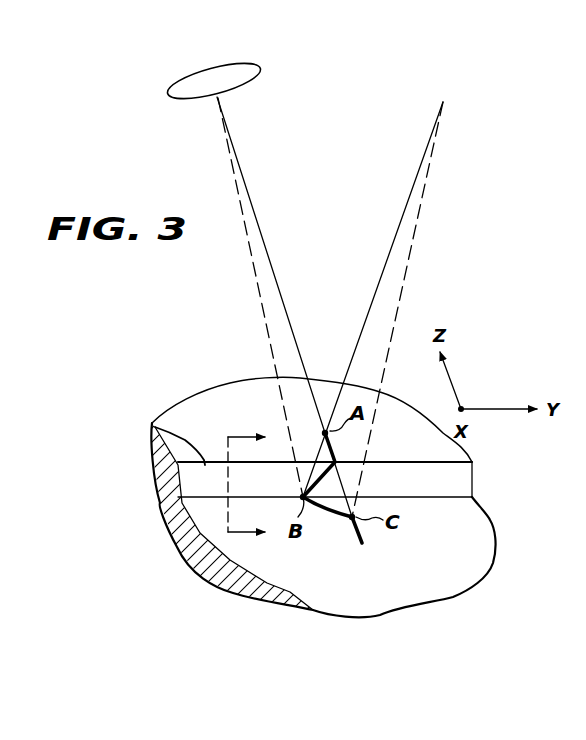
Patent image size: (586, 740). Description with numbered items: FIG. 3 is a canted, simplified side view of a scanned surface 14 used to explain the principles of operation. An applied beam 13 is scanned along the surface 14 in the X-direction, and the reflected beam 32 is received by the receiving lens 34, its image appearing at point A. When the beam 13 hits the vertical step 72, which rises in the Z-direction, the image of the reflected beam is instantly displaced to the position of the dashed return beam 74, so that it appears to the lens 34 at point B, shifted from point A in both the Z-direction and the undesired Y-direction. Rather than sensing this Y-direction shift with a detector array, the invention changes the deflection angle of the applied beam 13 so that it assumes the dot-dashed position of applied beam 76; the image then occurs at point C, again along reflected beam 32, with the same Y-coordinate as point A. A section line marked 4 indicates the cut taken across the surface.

The receiving lens 34 is at (185, 100).
The reflected beam 32 is at (240, 157).
The dashed return beam 74 is at (247, 250).
The beam 13 is at (407, 200).
The applied beam 76 is at (406, 270).
The surface 14 is at (152, 423).
The vertical step 72 is at (458, 472).
The section line 4- 4 is at (246, 485).